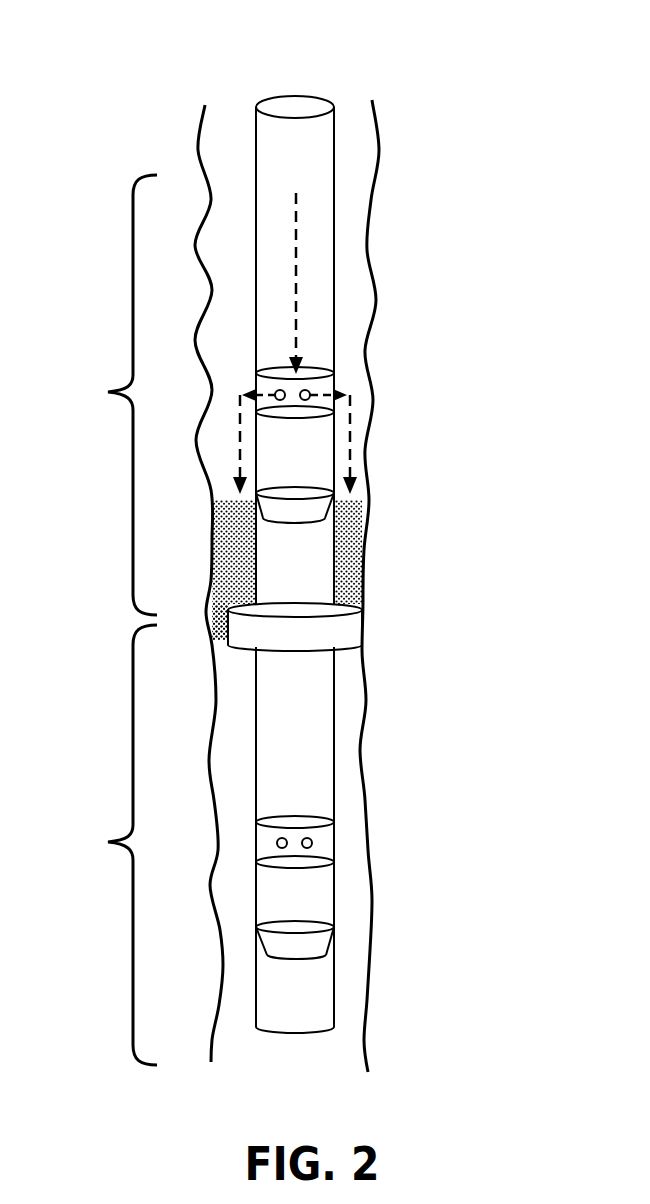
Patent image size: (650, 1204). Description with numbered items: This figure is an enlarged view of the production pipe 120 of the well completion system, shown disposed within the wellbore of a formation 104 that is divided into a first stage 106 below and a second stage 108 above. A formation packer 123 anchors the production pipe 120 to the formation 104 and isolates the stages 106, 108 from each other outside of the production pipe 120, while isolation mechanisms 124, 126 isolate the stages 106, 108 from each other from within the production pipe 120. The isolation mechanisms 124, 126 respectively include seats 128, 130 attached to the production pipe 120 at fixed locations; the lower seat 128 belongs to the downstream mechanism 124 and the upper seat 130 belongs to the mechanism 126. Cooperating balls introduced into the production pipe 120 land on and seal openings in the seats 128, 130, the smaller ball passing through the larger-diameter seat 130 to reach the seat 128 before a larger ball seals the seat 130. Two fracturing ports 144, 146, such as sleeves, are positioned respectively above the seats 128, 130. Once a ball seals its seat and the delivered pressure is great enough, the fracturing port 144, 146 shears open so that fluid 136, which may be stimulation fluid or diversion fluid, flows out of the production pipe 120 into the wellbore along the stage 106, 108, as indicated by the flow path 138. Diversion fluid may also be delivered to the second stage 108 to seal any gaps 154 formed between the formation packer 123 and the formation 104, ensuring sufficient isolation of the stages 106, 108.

The formation 104 is at (93, 295).
The first stage 106 is at (104, 845).
The second stage 108 is at (105, 395).
The production pipe 120 is at (358, 94).
The formation packer 123 is at (357, 630).
The isolation mechanism 124 is at (389, 918).
The seat 128 is at (310, 928).
The isolation mechanism 126 is at (375, 467).
The seat 130 is at (303, 490).
The fluid 136 is at (363, 545).
The flow path 138 is at (360, 397).
The fracturing port 144 is at (322, 843).
The fracturing port 146 is at (315, 368).
The gaps 154 is at (213, 632).